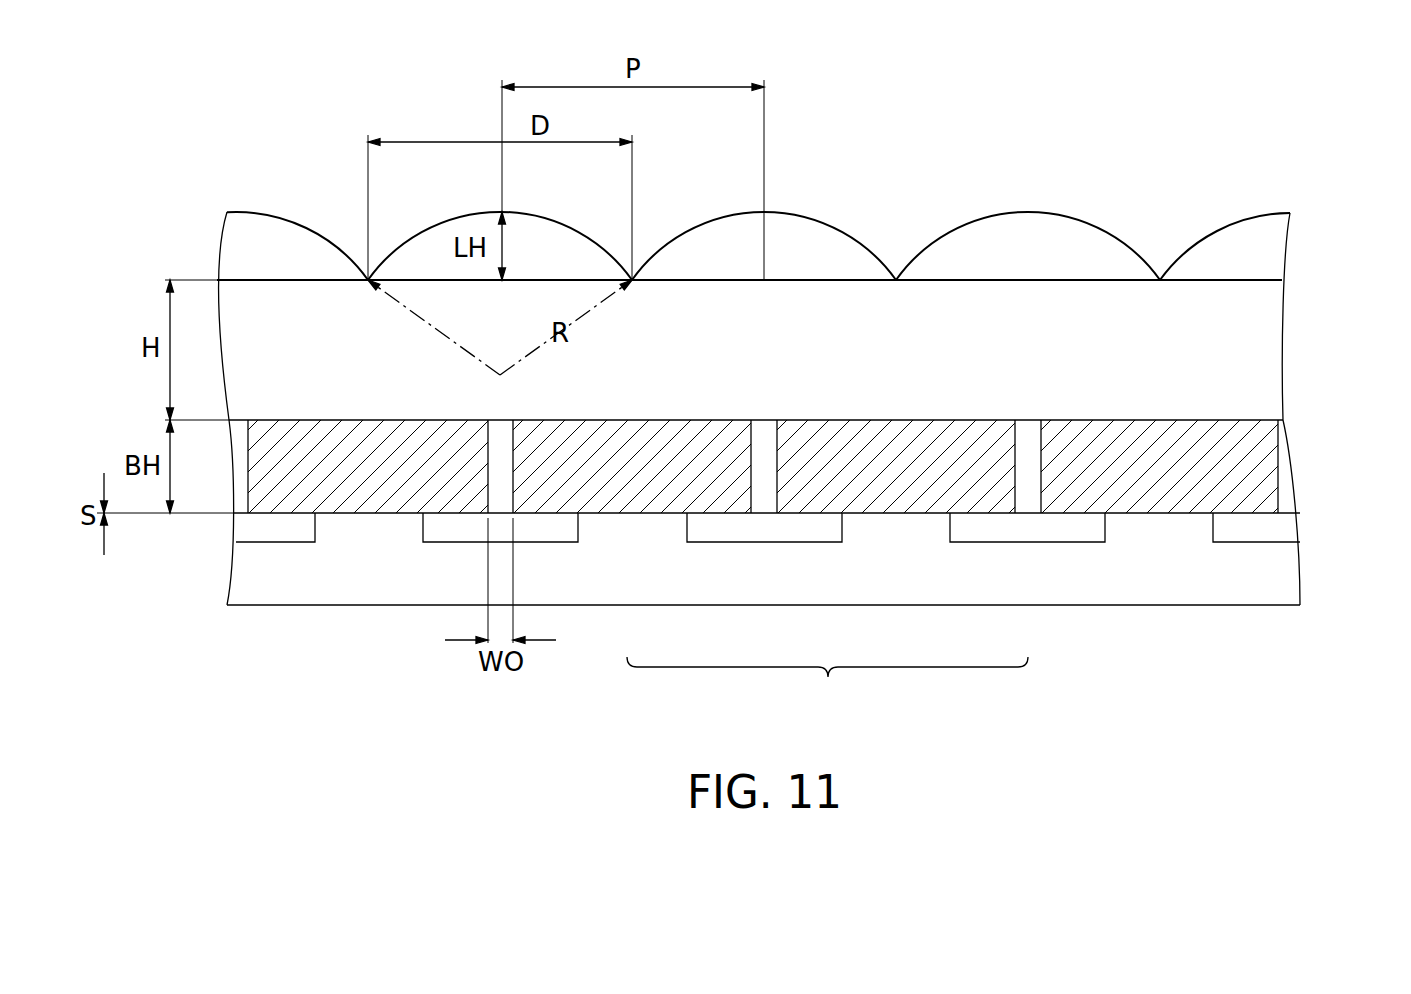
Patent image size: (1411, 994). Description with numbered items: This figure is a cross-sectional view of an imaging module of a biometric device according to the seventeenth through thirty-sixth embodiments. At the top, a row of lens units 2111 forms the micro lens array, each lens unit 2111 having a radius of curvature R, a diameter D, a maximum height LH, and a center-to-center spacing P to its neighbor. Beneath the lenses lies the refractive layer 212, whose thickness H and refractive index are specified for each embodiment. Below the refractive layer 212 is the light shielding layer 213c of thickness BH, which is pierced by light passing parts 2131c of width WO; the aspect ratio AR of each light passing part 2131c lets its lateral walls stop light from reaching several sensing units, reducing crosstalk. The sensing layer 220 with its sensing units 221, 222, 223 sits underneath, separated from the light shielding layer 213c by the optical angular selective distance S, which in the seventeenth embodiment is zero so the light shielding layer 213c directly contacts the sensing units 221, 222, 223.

The lens unit 2111 is at (572, 228).
The refractive layer 212 is at (1253, 348).
The light shielding layer 213c is at (1253, 469).
The light passing part 2131c is at (504, 426).
The sensing layer 220 is at (827, 682).
The sensing unit 221 is at (563, 527).
The sensing unit 222 is at (781, 527).
The sensing unit 223 is at (1007, 525).